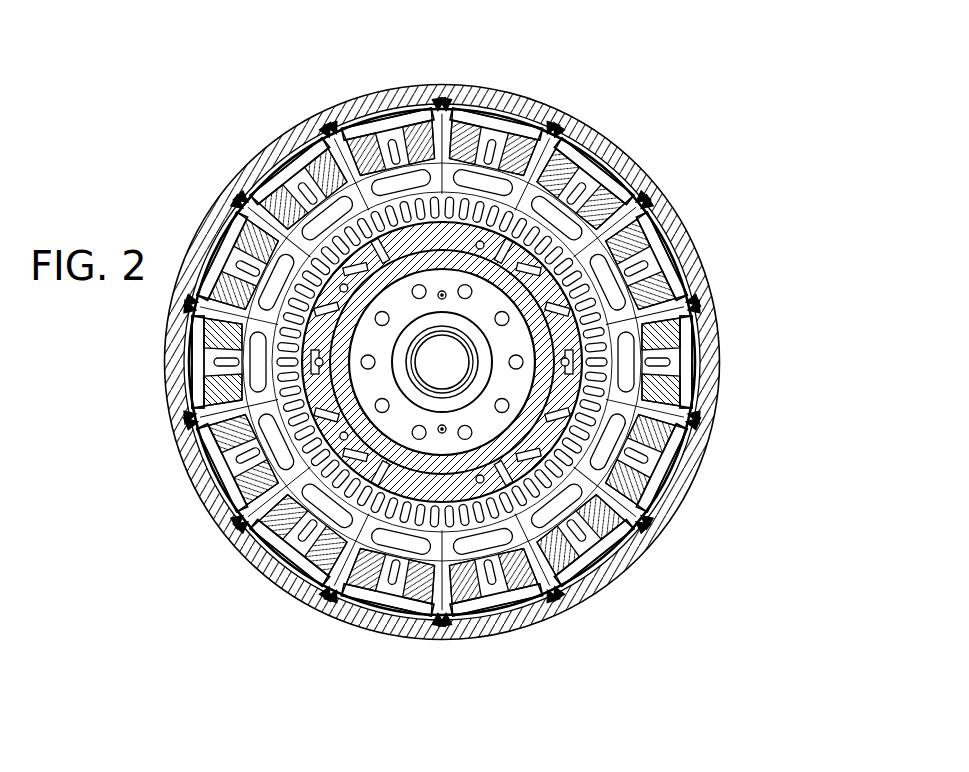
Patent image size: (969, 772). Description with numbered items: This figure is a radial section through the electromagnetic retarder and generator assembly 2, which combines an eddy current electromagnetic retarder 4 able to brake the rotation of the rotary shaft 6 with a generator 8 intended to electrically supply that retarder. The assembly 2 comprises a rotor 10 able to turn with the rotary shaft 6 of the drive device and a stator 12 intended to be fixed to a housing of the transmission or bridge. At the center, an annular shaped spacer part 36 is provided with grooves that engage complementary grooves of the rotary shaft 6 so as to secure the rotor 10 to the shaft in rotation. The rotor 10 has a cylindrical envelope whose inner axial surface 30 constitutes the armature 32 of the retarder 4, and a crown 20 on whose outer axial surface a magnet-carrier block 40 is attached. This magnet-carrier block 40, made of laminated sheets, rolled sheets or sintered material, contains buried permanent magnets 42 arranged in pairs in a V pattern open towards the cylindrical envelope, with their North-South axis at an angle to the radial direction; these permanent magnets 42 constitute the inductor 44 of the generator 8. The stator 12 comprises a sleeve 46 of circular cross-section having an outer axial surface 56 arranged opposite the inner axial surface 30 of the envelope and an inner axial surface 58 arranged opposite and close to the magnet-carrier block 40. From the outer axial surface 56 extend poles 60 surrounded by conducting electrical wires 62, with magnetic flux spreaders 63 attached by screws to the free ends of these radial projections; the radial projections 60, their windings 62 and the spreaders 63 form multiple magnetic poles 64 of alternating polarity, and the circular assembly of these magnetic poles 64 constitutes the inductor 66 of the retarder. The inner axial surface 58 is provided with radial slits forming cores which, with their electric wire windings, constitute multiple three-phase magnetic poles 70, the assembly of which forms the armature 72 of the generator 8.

The electromagnetic retarder and generator assembly 2 is at (192, 0).
The eddy current electromagnetic retarder 4 is at (693, 272).
The rotary shaft 6 is at (442, 362).
The generator 8 is at (620, 358).
The rotor 10 is at (643, 172).
The stator 12 is at (312, 602).
The crown 20 is at (218, 448).
The inner axial surface 30 is at (442, 335).
The armature 32 is at (573, 187).
The spacer part 36 is at (378, 375).
The magnet-carrier block 40 is at (353, 138).
The permanent magnets 42 is at (442, 268).
The inductor 44 is at (438, 192).
The sleeve 46 is at (587, 245).
The outer axial surface 56 is at (640, 405).
The inner axial surface 58 is at (628, 330).
The poles 60 is at (640, 462).
The conducting electrical wires 62 is at (623, 428).
The magnetic flux spreaders 63 is at (655, 497).
The magnetic poles 64 is at (442, 390).
The inductor 66 is at (515, 612).
The three-phase magnetic poles 70 is at (407, 362).
The armature 72 is at (235, 220).